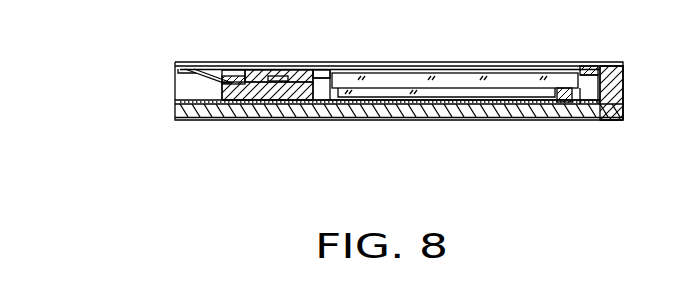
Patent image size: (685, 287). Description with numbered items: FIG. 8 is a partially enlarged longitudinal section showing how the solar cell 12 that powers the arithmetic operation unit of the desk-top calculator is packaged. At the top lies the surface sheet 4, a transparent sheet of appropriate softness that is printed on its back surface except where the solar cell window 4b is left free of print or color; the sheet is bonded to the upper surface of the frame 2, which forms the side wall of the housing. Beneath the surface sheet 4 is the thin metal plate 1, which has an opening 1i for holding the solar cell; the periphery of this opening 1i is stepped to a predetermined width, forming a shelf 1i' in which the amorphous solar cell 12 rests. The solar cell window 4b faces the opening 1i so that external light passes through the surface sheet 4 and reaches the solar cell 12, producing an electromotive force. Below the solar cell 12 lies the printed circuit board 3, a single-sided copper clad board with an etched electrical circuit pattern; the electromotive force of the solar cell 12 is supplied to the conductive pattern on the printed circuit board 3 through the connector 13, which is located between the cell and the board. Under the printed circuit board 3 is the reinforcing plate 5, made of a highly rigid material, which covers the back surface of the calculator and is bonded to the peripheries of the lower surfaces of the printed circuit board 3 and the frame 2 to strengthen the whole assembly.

The surface sheet 4 is at (277, 62).
The solar cell window 4b is at (498, 62).
The reinforcing plate 5 is at (252, 120).
The printed circuit board 3 is at (330, 100).
The shelf 1i' is at (312, 40).
The opening 1i is at (455, 44).
The solar cell 12 is at (535, 75).
The connector 13 is at (563, 102).
The thin metal plate 1 is at (593, 77).
The frame 2 is at (623, 80).